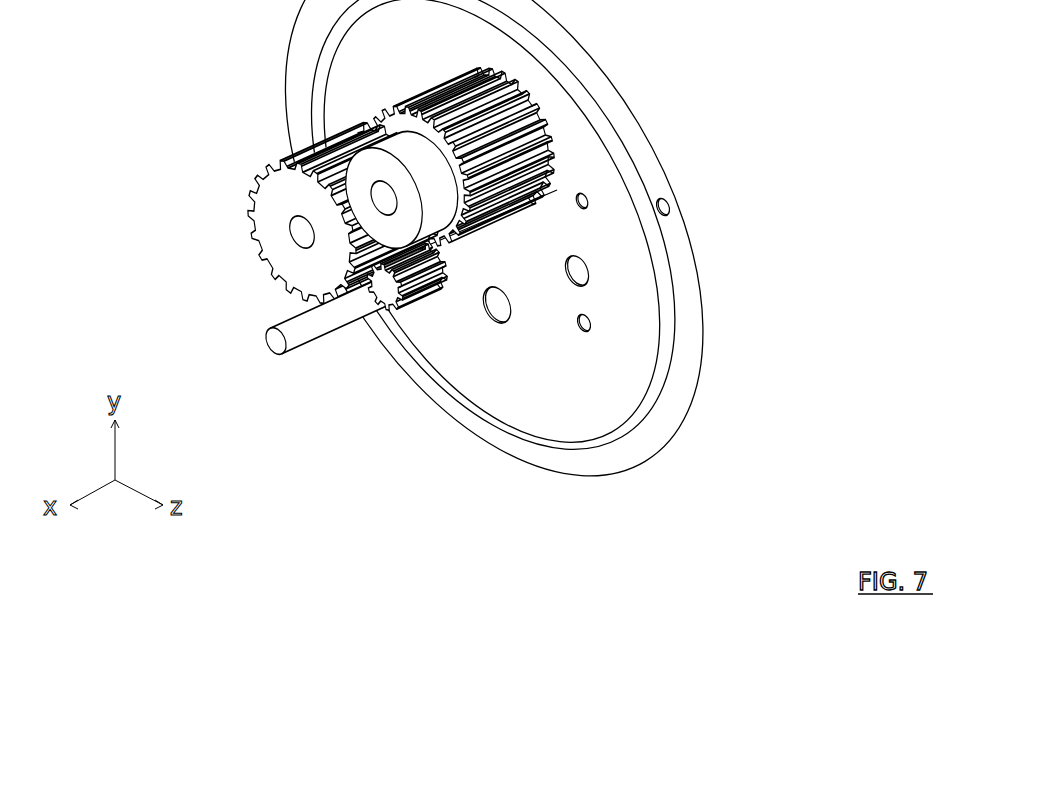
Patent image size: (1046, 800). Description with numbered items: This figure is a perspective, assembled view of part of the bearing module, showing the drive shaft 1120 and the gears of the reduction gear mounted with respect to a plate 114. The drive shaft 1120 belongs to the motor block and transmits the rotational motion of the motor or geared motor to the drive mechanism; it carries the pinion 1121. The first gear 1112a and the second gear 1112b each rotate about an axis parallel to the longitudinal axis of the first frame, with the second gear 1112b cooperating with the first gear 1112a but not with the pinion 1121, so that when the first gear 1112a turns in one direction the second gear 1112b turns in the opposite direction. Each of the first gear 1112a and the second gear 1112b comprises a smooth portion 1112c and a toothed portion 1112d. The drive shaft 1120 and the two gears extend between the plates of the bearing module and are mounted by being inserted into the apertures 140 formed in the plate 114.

The plate 114 is at (583, 67).
The aperture 140 is at (499, 302).
The first gear 1112a is at (271, 202).
The second gear 1112b is at (150, 45).
The smooth portion 1112c is at (398, 140).
The toothed portion 1112d is at (437, 73).
The drive shaft 1120 is at (305, 323).
The pinion 1121 is at (390, 305).